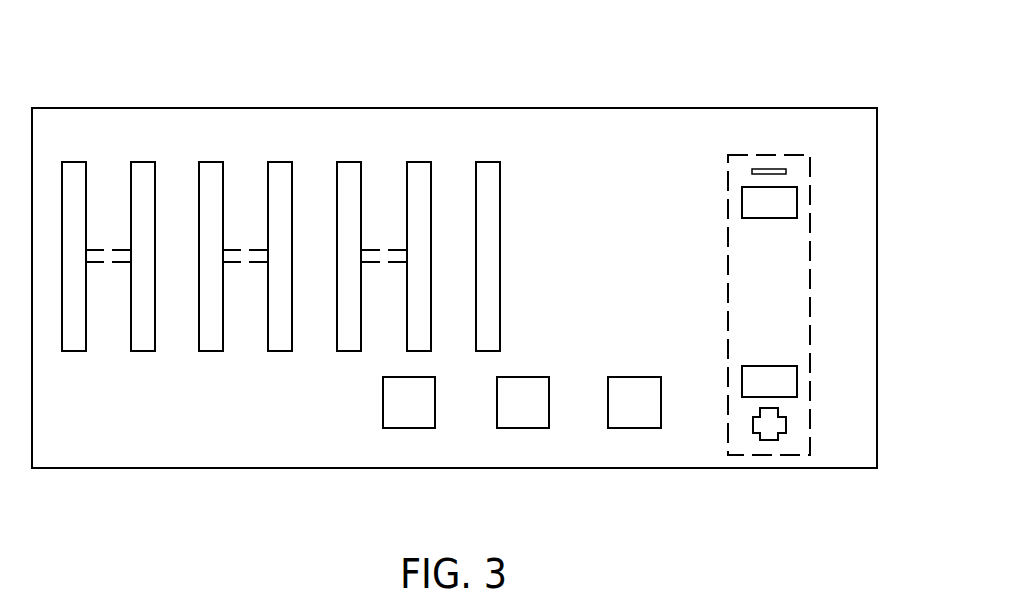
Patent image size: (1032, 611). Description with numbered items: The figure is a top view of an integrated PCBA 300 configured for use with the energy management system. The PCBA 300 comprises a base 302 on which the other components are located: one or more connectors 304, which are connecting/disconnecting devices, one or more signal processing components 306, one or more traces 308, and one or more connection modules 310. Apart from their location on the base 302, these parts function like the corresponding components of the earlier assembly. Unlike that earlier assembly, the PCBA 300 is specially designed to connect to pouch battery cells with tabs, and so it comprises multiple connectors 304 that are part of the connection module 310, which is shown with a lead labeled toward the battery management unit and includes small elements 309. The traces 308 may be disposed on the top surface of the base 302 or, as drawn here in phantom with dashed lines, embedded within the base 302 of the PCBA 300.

The integrated PCBA 300 is at (825, 55).
The base 302 is at (597, 146).
The connectors 304 is at (143, 352).
The signal processing components 306 is at (383, 400).
The traces 308 is at (259, 265).
The connectors 309 is at (799, 205).
The connection module 310 is at (770, 456).